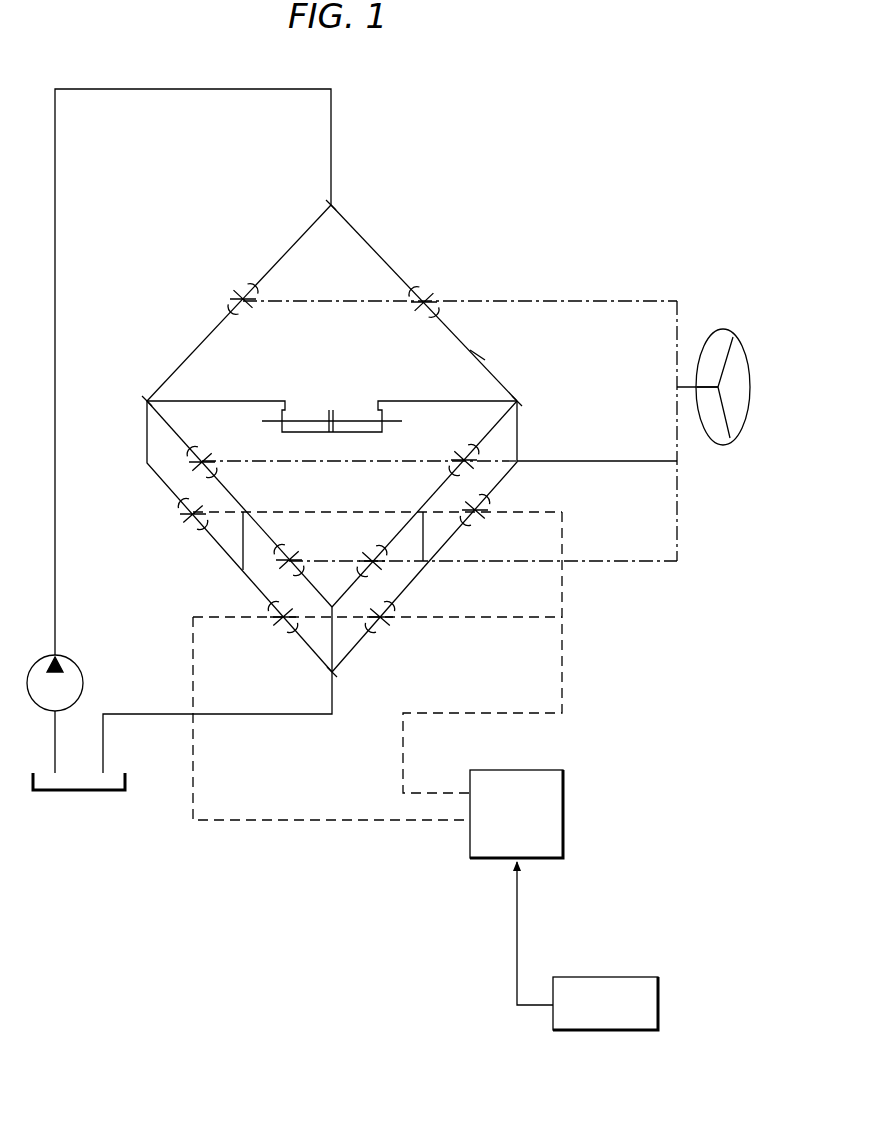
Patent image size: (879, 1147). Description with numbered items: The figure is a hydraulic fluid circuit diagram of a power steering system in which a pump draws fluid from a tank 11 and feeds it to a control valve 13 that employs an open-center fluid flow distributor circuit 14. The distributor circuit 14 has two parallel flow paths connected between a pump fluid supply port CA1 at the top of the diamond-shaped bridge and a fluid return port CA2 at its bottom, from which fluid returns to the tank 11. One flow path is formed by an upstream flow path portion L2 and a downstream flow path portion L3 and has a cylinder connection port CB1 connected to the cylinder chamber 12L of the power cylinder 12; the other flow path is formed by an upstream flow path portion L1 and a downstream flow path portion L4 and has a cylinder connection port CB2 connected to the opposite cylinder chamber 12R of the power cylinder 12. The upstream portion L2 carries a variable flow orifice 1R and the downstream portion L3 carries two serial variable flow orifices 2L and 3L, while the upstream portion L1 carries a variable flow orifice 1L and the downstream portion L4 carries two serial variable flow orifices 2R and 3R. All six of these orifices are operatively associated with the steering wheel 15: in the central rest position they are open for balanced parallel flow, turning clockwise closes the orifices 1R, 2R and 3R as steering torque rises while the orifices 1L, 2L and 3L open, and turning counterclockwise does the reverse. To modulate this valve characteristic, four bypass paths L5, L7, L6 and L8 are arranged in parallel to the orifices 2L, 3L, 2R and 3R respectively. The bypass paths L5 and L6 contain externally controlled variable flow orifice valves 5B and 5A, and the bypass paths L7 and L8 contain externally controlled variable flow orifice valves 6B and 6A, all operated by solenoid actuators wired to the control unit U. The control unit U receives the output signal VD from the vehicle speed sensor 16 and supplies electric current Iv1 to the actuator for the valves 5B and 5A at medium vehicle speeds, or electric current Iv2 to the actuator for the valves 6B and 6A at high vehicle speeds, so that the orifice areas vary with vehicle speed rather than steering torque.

The tank 11 is at (125, 775).
The power cylinder 12 is at (332, 401).
The cylinder chamber 12R is at (324, 426).
The cylinder chamber 12L is at (342, 427).
The control valve 13 is at (187, 340).
The fluid flow distributor circuit 14 is at (478, 349).
The steering wheel 15 is at (715, 446).
The vehicle speed sensor 16 is at (618, 977).
The control unit U is at (563, 822).
The output signal VD is at (535, 933).
The electric current Iv1 is at (402, 768).
The electric current Iv2 is at (193, 781).
The pump fluid supply port CA1 is at (332, 205).
The fluid return port CA2 is at (333, 673).
The cylinder connection port CB1 is at (517, 401).
The cylinder connection port CB2 is at (146, 401).
The upstream flow path portion L1 is at (307, 228).
The upstream flow path portion L2 is at (372, 243).
The downstream flow path portion L3 is at (489, 432).
The downstream flow path portion L4 is at (172, 430).
The bypass path L5 is at (507, 473).
The bypass path L6 is at (167, 486).
The bypass path L7 is at (415, 578).
The bypass path L8 is at (256, 585).
The variable flow orifice 1L is at (239, 295).
The variable flow orifice 1R is at (429, 298).
The variable flow orifice 2R is at (206, 459).
The variable flow orifice 2L is at (461, 456).
The variable flow orifice 3R is at (291, 555).
The variable flow orifice 3L is at (367, 557).
The externally controlled variable flow orifice valve 5A is at (212, 498).
The externally controlled variable flow orifice valve 5B is at (458, 492).
The externally controlled variable flow orifice valve 6A is at (302, 598).
The externally controlled variable flow orifice valve 6B is at (364, 598).